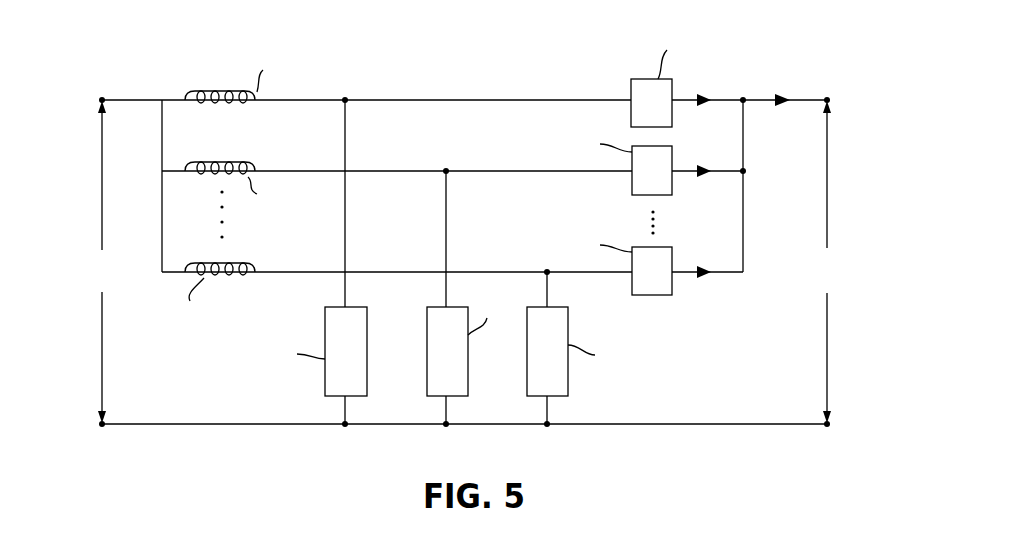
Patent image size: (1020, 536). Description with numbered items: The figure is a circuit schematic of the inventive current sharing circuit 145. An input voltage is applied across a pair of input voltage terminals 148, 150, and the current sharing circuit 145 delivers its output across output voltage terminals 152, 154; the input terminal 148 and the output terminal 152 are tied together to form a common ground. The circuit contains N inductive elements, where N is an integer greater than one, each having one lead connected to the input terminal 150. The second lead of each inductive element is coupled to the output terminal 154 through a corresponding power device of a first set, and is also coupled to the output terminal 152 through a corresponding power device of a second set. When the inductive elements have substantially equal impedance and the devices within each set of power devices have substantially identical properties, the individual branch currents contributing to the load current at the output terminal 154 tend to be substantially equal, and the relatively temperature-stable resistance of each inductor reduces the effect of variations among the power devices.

The current sharing circuit 145 is at (484, 74).
The input voltage terminal 148 is at (102, 425).
The input voltage terminal 150 is at (100, 101).
The output voltage terminal 152 is at (830, 425).
The output voltage terminal 154 is at (830, 101).